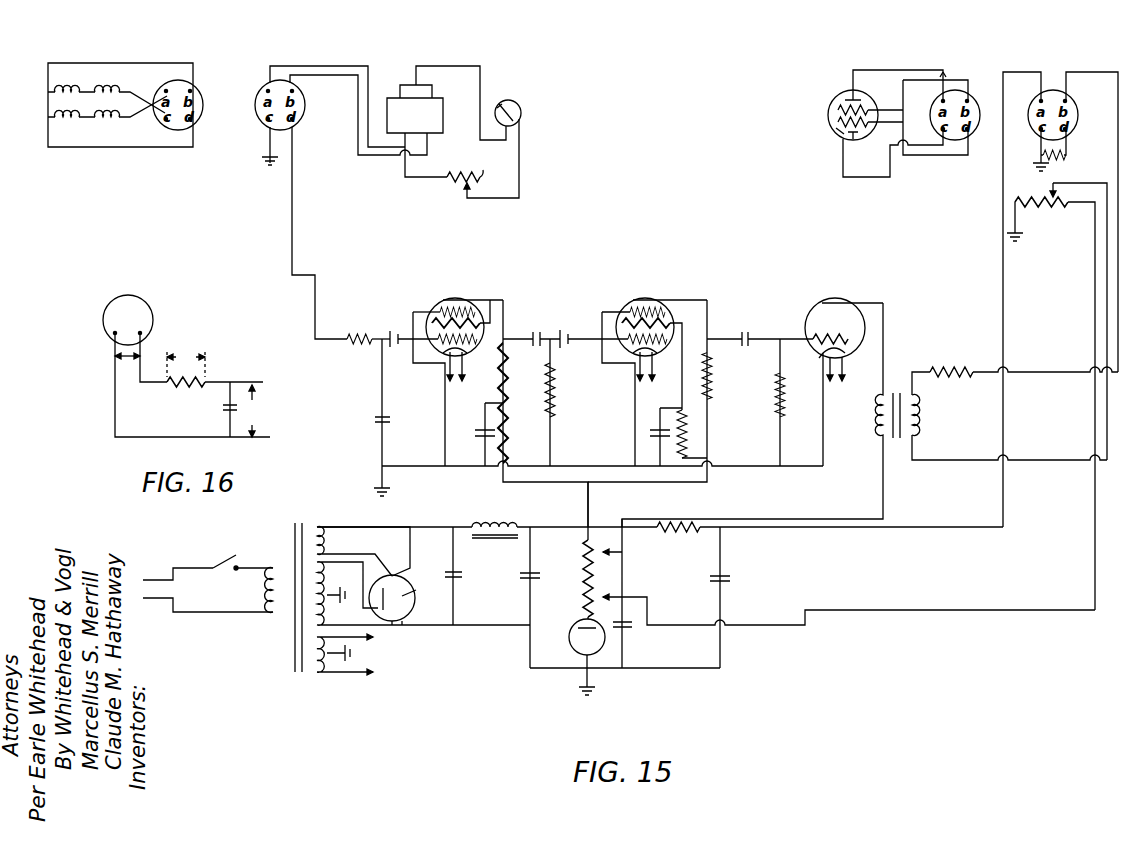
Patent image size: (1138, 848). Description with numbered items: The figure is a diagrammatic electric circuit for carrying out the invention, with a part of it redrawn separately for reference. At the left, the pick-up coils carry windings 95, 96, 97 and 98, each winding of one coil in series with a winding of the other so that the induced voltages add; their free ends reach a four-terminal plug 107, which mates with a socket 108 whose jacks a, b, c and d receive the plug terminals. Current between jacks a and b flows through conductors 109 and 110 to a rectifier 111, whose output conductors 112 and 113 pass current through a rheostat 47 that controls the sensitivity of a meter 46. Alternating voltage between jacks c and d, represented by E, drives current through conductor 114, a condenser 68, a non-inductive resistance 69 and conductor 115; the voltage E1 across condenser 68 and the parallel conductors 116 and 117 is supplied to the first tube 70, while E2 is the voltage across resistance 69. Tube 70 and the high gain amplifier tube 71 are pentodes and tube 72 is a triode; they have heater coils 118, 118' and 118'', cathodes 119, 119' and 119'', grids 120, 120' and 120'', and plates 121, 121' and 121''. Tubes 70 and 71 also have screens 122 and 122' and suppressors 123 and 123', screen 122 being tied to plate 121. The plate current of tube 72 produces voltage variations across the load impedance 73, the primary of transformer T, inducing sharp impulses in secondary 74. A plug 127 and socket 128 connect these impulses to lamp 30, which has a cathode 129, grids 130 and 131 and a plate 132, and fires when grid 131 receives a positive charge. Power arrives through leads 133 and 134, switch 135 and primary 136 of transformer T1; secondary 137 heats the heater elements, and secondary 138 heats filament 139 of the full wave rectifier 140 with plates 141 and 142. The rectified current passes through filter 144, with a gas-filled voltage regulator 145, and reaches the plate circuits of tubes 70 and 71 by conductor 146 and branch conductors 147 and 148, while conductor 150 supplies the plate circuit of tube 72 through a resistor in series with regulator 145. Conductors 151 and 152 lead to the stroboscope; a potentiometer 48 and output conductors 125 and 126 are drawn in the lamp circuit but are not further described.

In FIG. 15, the winding 95 is at (68, 86).
In FIG. 15, the winding 96 is at (113, 125).
In FIG. 15, the winding 97 is at (107, 85).
In FIG. 15, the winding 98 is at (68, 125).
In FIG. 15, the four-terminal plug 107 is at (204, 113).
In FIG. 15, the socket 108 is at (256, 98).
In FIG. 16, the socket 108 is at (152, 313).
In FIG. 15, the conductor 109 is at (311, 66).
In FIG. 15, the conductor 110 is at (343, 75).
In FIG. 15, the rectifier 111 is at (415, 109).
In FIG. 15, the conductor 112 is at (438, 66).
In FIG. 15, the conductor 113 is at (412, 177).
In FIG. 15, the conductor 114 is at (264, 150).
In FIG. 16, the conductor 114 is at (115, 365).
In FIG. 15, the conductor 115 is at (293, 171).
In FIG. 16, the conductor 115 is at (147, 355).
In FIG. 15, the meter 46 is at (523, 112).
In FIG. 15, the rheostat 47 is at (481, 170).
In FIG. 15, the lamp 30 is at (824, 121).
In FIG. 15, the cathode 129 is at (847, 139).
In FIG. 15, the grid 130 is at (825, 142).
In FIG. 15, the grid 131 is at (822, 99).
In FIG. 15, the plate 132 is at (850, 95).
In FIG. 15, the socket 128 is at (973, 101).
In FIG. 15, the four-terminal plug 127 is at (1077, 116).
In FIG. 15, the potentiometer 48 is at (1049, 208).
In FIG. 15, the non-inductive resistance 69 is at (366, 344).
In FIG. 16, the non-inductive resistance 69 is at (191, 389).
In FIG. 15, the condenser 68 is at (376, 417).
In FIG. 16, the condenser 68 is at (224, 408).
In FIG. 15, the conductor 117 is at (395, 328).
In FIG. 16, the conductor 117 is at (240, 382).
In FIG. 15, the conductor 116 is at (420, 464).
In FIG. 16, the conductor 116 is at (236, 438).
In FIG. 15, the vacuum tube 70 is at (461, 300).
In FIG. 15, the high gain amplifier tube 71 is at (647, 299).
In FIG. 15, the triode tube 72 is at (838, 299).
In FIG. 15, the heater coil 118 is at (476, 372).
In FIG. 15, the cathode 119 is at (438, 346).
In FIG. 15, the grid 120 is at (481, 349).
In FIG. 15, the plate 121 is at (517, 373).
In FIG. 15, the screen 122 is at (424, 302).
In FIG. 15, the suppressor 123 is at (450, 298).
In FIG. 15, the heater coil 118' is at (666, 372).
In FIG. 15, the cathode 119' is at (627, 347).
In FIG. 15, the grid 120' is at (672, 351).
In FIG. 15, the plate 121' is at (731, 368).
In FIG. 15, the screen 122' is at (604, 317).
In FIG. 15, the suppressor 123' is at (638, 297).
In FIG. 15, the heater coil 118'' is at (857, 369).
In FIG. 15, the cathode 119'' is at (811, 356).
In FIG. 15, the grid 120'' is at (816, 319).
In FIG. 15, the plate 121'' is at (883, 287).
In FIG. 15, the transformer T is at (897, 407).
In FIG. 15, the primary of transformer T 73 is at (876, 423).
In FIG. 15, the secondary of transformer T 74 is at (918, 426).
In FIG. 15, the output conductor 125 is at (1060, 377).
In FIG. 15, the output conductor 126 is at (1060, 465).
In FIG. 15, the lead 133 is at (160, 564).
In FIG. 15, the lead 134 is at (168, 618).
In FIG. 15, the switch 135 is at (221, 558).
In FIG. 15, the primary of transformer T1 136 is at (275, 594).
In FIG. 15, the transformer T1 is at (301, 587).
In FIG. 15, the secondary of transformer T1 137 is at (341, 675).
In FIG. 15, the secondary of transformer T1 138 is at (354, 527).
In FIG. 15, the filament 139 is at (419, 562).
In FIG. 15, the full wave rectifier 140 is at (419, 617).
In FIG. 15, the plate 141 is at (392, 599).
In FIG. 15, the plate 142 is at (421, 592).
In FIG. 15, the filter 144 is at (518, 596).
In FIG. 15, the voltage regulator 145 is at (587, 657).
In FIG. 15, the conductor 146 is at (575, 502).
In FIG. 15, the branch conductor 147 is at (539, 485).
In FIG. 15, the branch conductor 148 is at (686, 492).
In FIG. 15, the conductor 150 is at (825, 518).
In FIG. 15, the conductor 151 is at (948, 534).
In FIG. 15, the conductor 152 is at (985, 620).
In FIG. 16, the voltage E is at (127, 351).
In FIG. 16, the voltage E1 is at (254, 411).
In FIG. 16, the voltage E2 is at (186, 364).